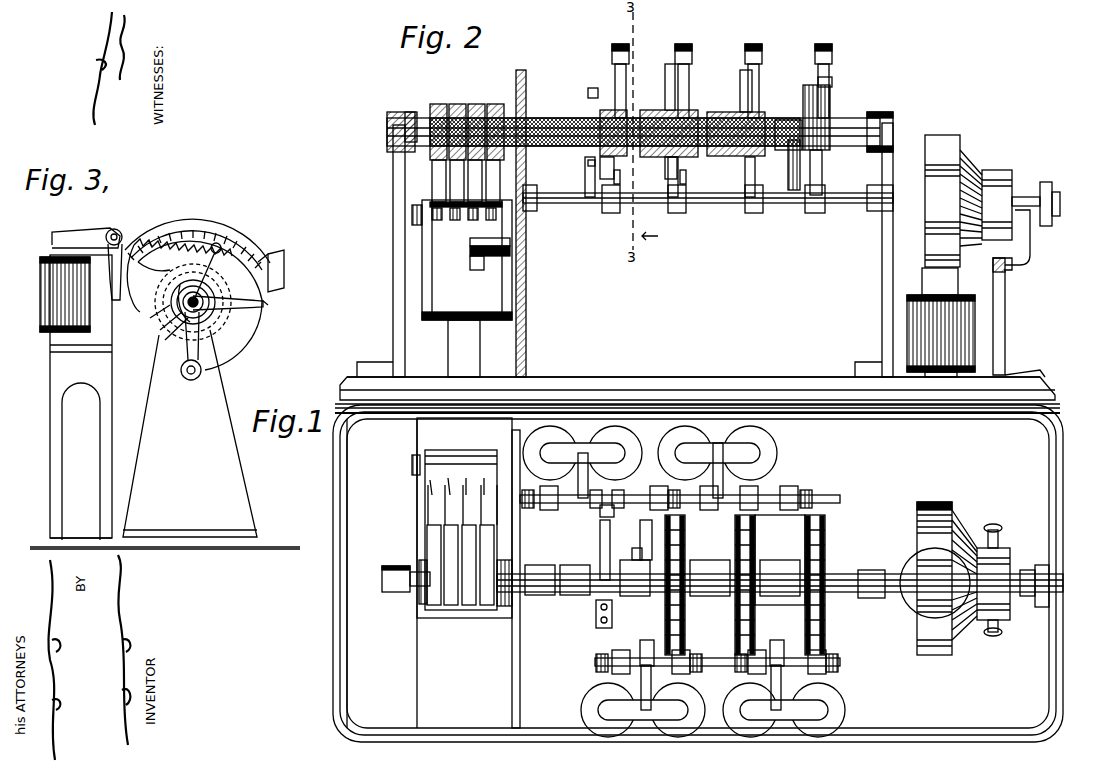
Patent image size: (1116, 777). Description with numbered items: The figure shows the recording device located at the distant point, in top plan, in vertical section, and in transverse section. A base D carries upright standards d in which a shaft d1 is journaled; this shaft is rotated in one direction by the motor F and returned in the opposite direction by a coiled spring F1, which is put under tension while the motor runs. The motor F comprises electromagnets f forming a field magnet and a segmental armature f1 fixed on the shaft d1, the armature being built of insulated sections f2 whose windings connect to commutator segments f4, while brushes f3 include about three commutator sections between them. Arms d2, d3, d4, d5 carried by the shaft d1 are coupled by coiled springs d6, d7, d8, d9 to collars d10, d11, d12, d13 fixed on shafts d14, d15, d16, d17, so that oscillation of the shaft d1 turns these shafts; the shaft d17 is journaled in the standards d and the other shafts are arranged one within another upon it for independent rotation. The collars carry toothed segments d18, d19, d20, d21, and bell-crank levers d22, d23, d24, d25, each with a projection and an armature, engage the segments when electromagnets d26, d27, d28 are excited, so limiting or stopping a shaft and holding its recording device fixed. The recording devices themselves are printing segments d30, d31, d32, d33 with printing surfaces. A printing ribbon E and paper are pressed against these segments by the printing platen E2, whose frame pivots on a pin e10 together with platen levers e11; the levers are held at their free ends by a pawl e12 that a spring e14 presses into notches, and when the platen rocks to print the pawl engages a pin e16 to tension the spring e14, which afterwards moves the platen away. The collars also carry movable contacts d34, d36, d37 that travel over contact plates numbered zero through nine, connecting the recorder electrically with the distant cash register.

In FIG. 2, the base D is at (693, 363).
In FIG. 1, the base D is at (698, 573).
In FIG. 2, the printing ribbon E is at (430, 203).
In FIG. 2, the printing platen E2 is at (428, 235).
In FIG. 1, the printing platen E2 is at (429, 573).
In FIG. 2, the motor F is at (957, 201).
In FIG. 1, the motor F is at (929, 578).
In FIG. 2, the coiled spring F1 is at (1036, 187).
In FIG. 1, the coiled spring F1 is at (1050, 582).
In FIG. 2, the electromagnets f is at (941, 322).
In FIG. 1, the electromagnets f is at (910, 590).
In FIG. 2, the armature f1 is at (930, 233).
In FIG. 1, the insulated sections f2 is at (936, 506).
In FIG. 1, the brushes f3 is at (998, 524).
In FIG. 2, the commutator segments f4 is at (1012, 235).
In FIG. 1, the commutator segments f4 is at (1010, 556).
In FIG. 2, the standards d is at (527, 312).
In FIG. 3, the shaft d1 is at (150, 318).
In FIG. 2, the shaft d1 is at (736, 190).
In FIG. 3, the arm d2 is at (190, 380).
In FIG. 2, the arm d2 is at (620, 183).
In FIG. 2, the arm d3 is at (684, 183).
In FIG. 2, the arm d4 is at (788, 166).
In FIG. 2, the arm d5 is at (822, 182).
In FIG. 3, the coiled spring d6 is at (215, 322).
In FIG. 3, the coiled spring d7 is at (179, 280).
In FIG. 2, the coiled spring d8 is at (736, 125).
In FIG. 3, the coiled spring d9 is at (165, 340).
In FIG. 2, the coiled spring d9 is at (822, 108).
In FIG. 1, the coiled spring d9 is at (712, 560).
In FIG. 2, the collar d10 is at (600, 114).
In FIG. 1, the collar d10 is at (568, 596).
In FIG. 3, the collar d11 is at (217, 272).
In FIG. 2, the collar d11 is at (685, 112).
In FIG. 1, the collar d11 is at (625, 567).
In FIG. 2, the collar d12 is at (765, 115).
In FIG. 1, the collar d12 is at (712, 596).
In FIG. 1, the collar d13 is at (780, 575).
In FIG. 3, the shaft d14 is at (265, 304).
In FIG. 2, the shaft d14 is at (536, 120).
In FIG. 1, the shaft d14 is at (618, 572).
In FIG. 2, the shaft d15 is at (700, 118).
In FIG. 3, the shaft d16 is at (160, 330).
In FIG. 2, the shaft d16 is at (614, 100).
In FIG. 1, the shaft d16 is at (648, 598).
In FIG. 2, the shaft d17 is at (850, 122).
In FIG. 2, the toothed segment d18 is at (585, 172).
In FIG. 1, the toothed segment d19 is at (780, 593).
In FIG. 2, the toothed segment d20 is at (714, 185).
In FIG. 1, the toothed segment d21 is at (717, 642).
In FIG. 3, the bell-crank lever d22 is at (80, 240).
In FIG. 1, the bell-crank lever d22 is at (680, 486).
In FIG. 1, the bell-crank lever d23 is at (643, 701).
In FIG. 1, the bell-crank lever d24 is at (841, 690).
In FIG. 1, the bell-crank lever d25 is at (780, 684).
In FIG. 3, the electromagnet d26 is at (65, 294).
In FIG. 1, the electromagnet d26 is at (582, 462).
In FIG. 1, the electromagnet d27 is at (650, 684).
In FIG. 1, the electromagnet d28 is at (772, 457).
In FIG. 2, the printing segment d30 is at (496, 104).
In FIG. 1, the printing segment d30 is at (488, 606).
In FIG. 2, the printing segment d31 is at (478, 104).
In FIG. 1, the printing segment d31 is at (468, 606).
In FIG. 2, the printing segment d32 is at (457, 105).
In FIG. 1, the printing segment d32 is at (450, 606).
In FIG. 2, the printing segment d33 is at (432, 106).
In FIG. 1, the printing segment d33 is at (428, 604).
In FIG. 3, the movable contact d34 is at (284, 270).
In FIG. 1, the movable contact d34 is at (610, 525).
In FIG. 1, the movable contact d36 is at (615, 524).
In FIG. 2, the movable contact d37 is at (832, 82).
In FIG. 2, the pin e10 is at (412, 212).
In FIG. 1, the pin e10 is at (412, 462).
In FIG. 2, the platen levers e11 is at (470, 215).
In FIG. 1, the platen levers e11 is at (448, 492).
In FIG. 2, the pawl e12 is at (476, 236).
In FIG. 2, the spring e14 is at (474, 270).
In FIG. 2, the pin e16 is at (512, 250).